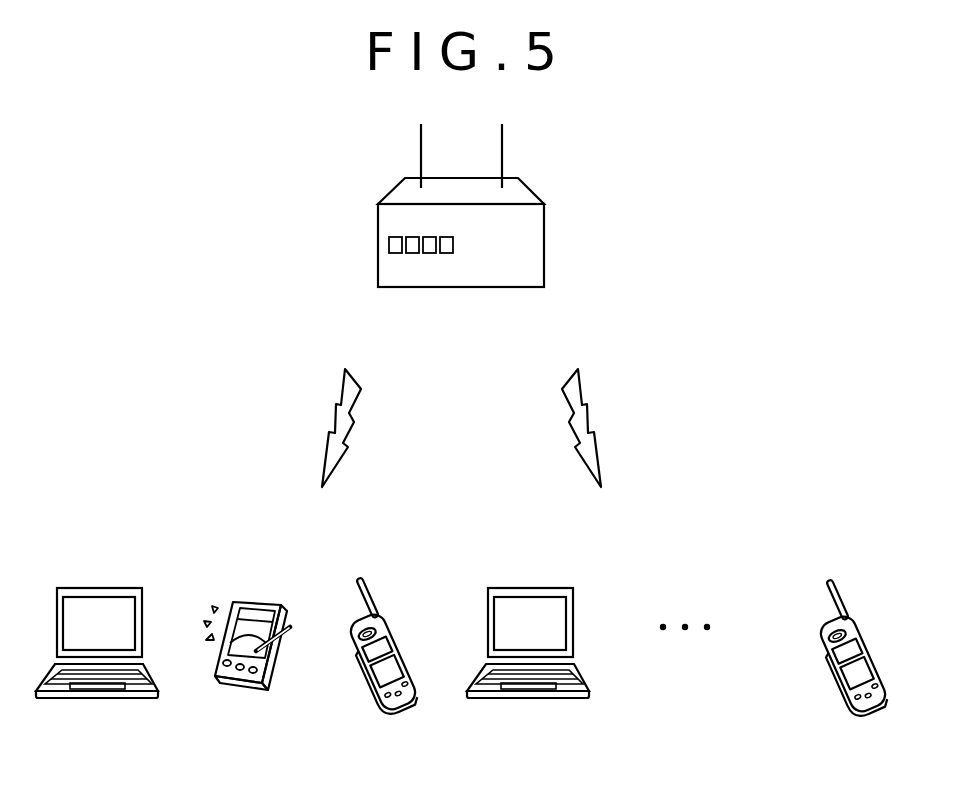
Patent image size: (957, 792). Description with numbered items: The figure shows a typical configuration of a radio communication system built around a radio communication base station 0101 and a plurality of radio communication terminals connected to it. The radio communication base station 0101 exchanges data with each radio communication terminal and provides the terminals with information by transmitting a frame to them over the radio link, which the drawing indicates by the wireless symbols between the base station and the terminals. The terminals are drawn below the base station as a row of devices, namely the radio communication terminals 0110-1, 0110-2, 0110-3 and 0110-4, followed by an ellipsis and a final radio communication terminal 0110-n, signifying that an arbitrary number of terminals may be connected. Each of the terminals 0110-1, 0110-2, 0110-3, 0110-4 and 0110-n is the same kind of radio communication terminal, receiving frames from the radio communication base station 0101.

The radio communication base station 0101 is at (388, 222).
The radio communication terminal 0110-1 is at (98, 585).
The radio communication terminal 0110-2 is at (252, 597).
The radio communication terminal 0110-3 is at (368, 583).
The radio communication terminal 0110-4 is at (534, 585).
The radio communication terminal 0110-n is at (838, 585).